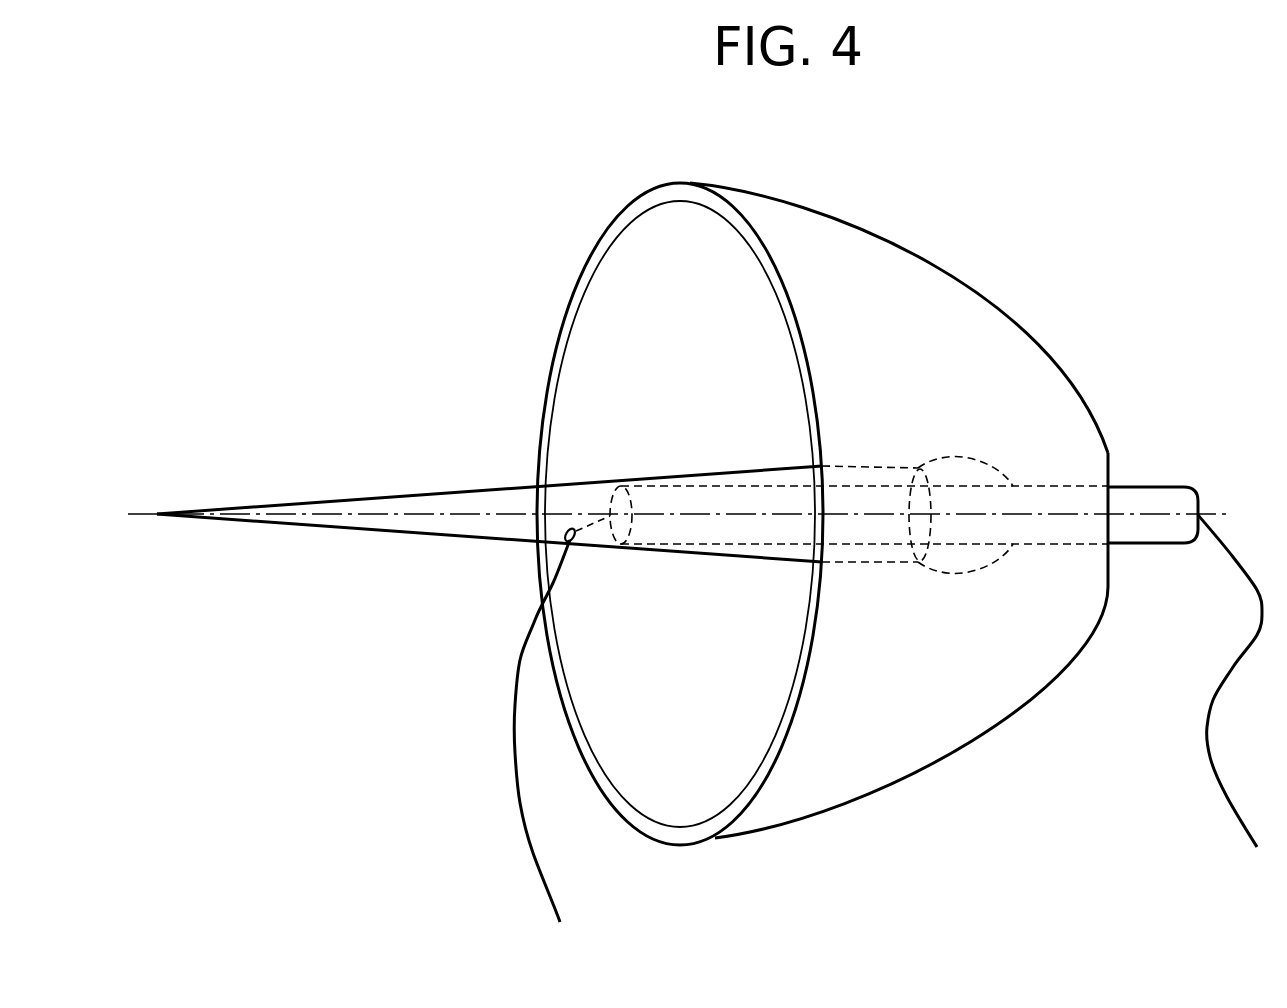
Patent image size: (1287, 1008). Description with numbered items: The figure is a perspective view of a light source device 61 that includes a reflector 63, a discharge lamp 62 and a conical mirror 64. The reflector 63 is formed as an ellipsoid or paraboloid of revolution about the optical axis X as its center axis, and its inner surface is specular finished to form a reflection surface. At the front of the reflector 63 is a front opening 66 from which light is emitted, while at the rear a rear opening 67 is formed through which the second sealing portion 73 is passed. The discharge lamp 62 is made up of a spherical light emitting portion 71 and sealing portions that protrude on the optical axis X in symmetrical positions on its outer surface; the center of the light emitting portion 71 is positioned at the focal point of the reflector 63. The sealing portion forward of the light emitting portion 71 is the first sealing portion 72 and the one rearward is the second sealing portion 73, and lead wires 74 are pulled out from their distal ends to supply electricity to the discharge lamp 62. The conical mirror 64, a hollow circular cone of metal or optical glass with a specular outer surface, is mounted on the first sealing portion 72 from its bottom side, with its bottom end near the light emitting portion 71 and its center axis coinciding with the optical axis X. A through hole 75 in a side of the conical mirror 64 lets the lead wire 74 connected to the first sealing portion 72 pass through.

The light source device 61 is at (397, 367).
The discharge lamp 62 is at (893, 503).
The reflector 63 is at (900, 758).
The conical mirror 64 is at (330, 517).
The front opening 66 is at (640, 327).
The rear opening 67 is at (1112, 468).
The light emitting portion 71 is at (983, 457).
The first sealing portion 72 is at (663, 497).
The second sealing portion 73 is at (1157, 502).
The lead wire 74 is at (515, 705).
The through hole 75 is at (563, 540).
The optical axis X is at (221, 520).